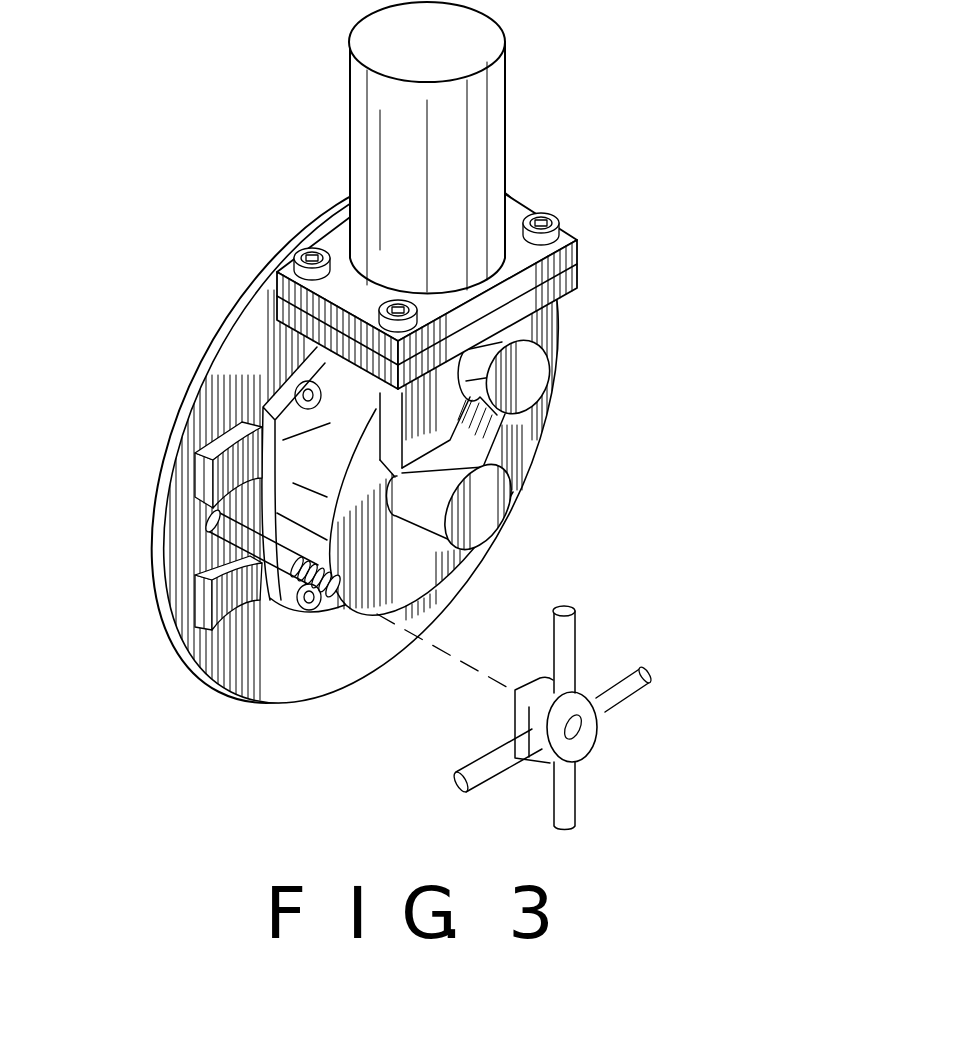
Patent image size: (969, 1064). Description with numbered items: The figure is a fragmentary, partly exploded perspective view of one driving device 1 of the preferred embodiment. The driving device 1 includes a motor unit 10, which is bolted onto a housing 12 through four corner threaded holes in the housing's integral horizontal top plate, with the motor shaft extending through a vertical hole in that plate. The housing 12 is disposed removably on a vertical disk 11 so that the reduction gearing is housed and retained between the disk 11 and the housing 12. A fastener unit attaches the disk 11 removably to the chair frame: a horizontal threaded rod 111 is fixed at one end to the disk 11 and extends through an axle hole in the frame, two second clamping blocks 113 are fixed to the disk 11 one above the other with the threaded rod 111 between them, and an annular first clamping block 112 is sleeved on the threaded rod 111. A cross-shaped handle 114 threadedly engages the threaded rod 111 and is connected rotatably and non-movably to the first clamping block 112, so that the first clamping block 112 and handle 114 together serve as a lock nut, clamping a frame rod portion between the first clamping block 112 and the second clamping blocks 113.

The driving device 1 is at (445, 416).
The motor unit 10 is at (490, 135).
The vertical disk 11 is at (218, 350).
The housing 12 is at (497, 513).
The horizontal threaded rod 111 is at (227, 528).
The annular first clamping block 112 is at (517, 714).
The second clamping blocks 113 is at (200, 478).
The cross-shaped handle 114 is at (607, 707).